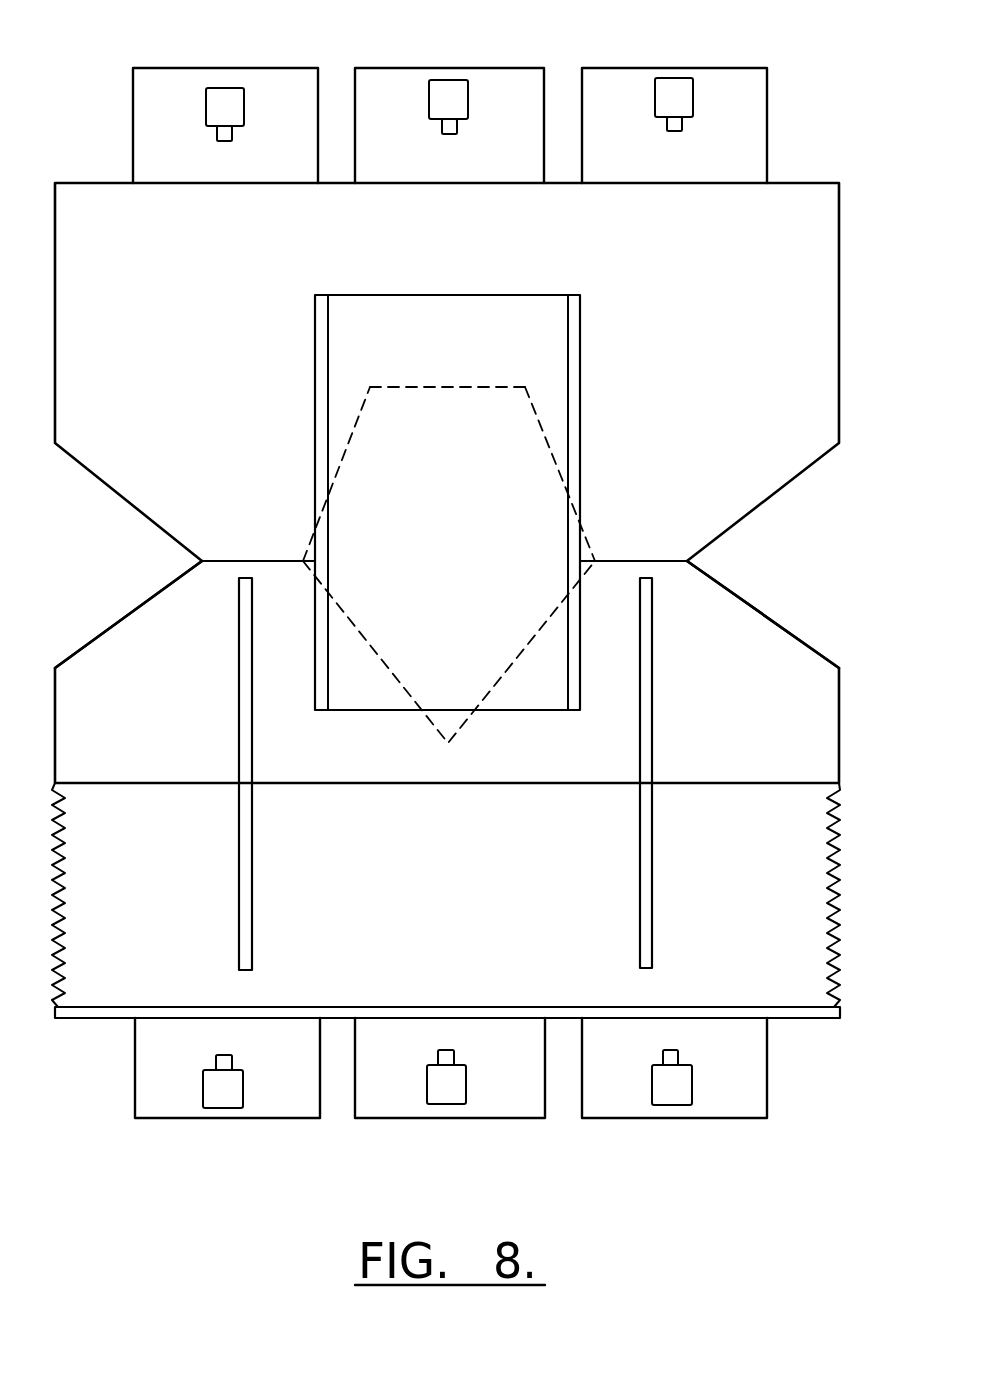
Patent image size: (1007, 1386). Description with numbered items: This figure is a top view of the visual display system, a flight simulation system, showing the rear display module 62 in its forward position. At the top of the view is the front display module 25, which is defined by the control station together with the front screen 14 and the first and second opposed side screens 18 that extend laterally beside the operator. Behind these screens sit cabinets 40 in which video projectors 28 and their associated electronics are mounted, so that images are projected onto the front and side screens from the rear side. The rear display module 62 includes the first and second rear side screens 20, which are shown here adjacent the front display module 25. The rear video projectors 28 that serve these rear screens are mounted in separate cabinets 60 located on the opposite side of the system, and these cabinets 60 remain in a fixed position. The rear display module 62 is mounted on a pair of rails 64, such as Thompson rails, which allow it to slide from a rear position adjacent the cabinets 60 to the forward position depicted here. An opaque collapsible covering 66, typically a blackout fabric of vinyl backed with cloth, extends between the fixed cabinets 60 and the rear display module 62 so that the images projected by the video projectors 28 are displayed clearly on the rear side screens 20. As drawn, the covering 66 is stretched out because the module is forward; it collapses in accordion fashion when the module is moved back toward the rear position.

The front screen 14 is at (452, 387).
The side screens 18 is at (317, 500).
The rear side screens 20 is at (425, 722).
The front display module 25 is at (852, 335).
The video projectors 28 is at (225, 105).
The cabinets 40 is at (222, 67).
The cabinets 60 is at (173, 1118).
The rear display module 62 is at (810, 597).
The rails 64 is at (252, 904).
The opaque collapsible covering 66 is at (63, 890).